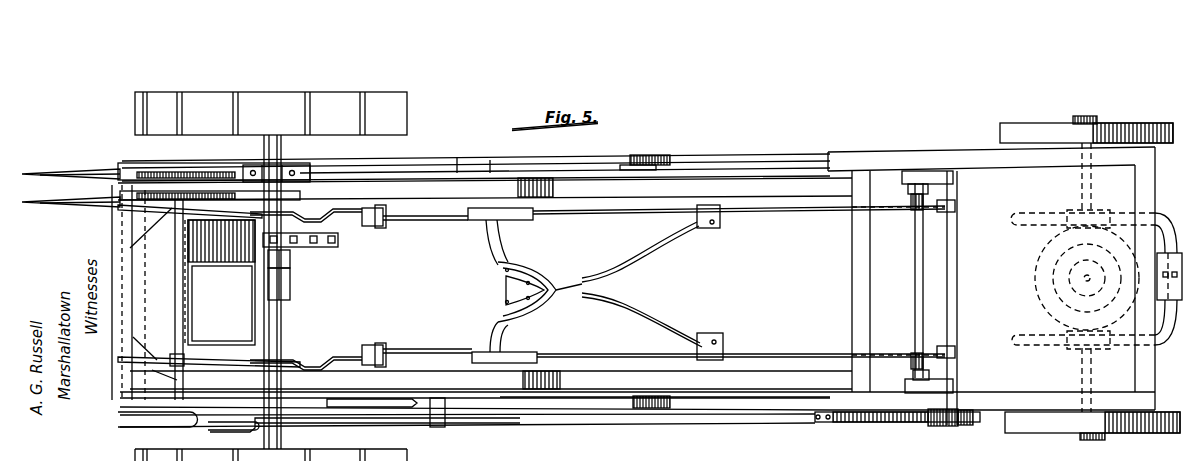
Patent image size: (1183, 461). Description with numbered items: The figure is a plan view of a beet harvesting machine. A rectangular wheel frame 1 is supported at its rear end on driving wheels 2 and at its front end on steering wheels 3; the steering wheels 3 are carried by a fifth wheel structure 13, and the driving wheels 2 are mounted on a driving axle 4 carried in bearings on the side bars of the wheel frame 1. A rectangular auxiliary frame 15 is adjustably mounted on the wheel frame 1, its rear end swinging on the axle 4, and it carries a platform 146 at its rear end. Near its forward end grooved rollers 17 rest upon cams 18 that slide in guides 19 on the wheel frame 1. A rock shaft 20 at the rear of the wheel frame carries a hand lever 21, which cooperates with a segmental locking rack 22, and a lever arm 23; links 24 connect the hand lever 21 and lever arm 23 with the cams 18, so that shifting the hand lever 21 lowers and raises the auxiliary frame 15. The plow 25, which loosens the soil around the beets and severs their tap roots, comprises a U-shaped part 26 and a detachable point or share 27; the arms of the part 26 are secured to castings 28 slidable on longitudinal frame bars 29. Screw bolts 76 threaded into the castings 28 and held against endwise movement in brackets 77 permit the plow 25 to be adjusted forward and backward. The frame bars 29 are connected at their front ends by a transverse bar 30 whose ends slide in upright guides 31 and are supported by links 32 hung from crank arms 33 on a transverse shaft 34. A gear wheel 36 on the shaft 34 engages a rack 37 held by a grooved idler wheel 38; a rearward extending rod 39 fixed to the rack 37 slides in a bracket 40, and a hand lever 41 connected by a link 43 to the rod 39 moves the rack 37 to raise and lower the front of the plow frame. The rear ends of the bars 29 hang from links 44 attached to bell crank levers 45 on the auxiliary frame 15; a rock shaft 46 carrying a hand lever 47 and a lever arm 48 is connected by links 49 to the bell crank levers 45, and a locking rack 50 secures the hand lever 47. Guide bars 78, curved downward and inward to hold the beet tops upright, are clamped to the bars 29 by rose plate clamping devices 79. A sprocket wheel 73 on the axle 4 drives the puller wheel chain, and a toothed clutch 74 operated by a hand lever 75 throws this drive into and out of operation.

The wheel frame 1 is at (836, 160).
The driving wheels 2 is at (340, 122).
The steering wheels 3 is at (1042, 131).
The driving axle 4 is at (284, 318).
The fifth wheel structure 13 is at (1042, 270).
The auxiliary frame 15 is at (743, 186).
The grooved rollers 17 is at (658, 410).
The cams 18 is at (626, 160).
The guides 19 is at (690, 160).
The rock shaft 20 is at (196, 269).
The hand lever 21 is at (70, 171).
The segmental locking rack 22 is at (228, 170).
The lever arm 23 is at (162, 422).
The links 24 is at (418, 163).
The plow 25 is at (500, 286).
The U-shaped part 26 is at (492, 243).
The point or share 27 is at (543, 292).
The castings 28 is at (520, 220).
The longitudinal frame bars 29 is at (645, 214).
The transverse rod or bar 30 is at (915, 280).
The upright guides 31 is at (945, 178).
The links 32 is at (925, 208).
The crank arms 33 is at (956, 206).
The transverse shaft 34 is at (955, 252).
The gear wheel 36 is at (962, 425).
The rack 37 is at (870, 424).
The grooved idler wheel 38 is at (946, 426).
The rearward extending rod 39 is at (767, 410).
The bracket 40 is at (455, 398).
The hand lever 41 is at (380, 403).
The link 43 is at (355, 424).
The links 44 is at (366, 222).
The bell crank levers 45 is at (350, 210).
The rock shaft 46 is at (176, 276).
The hand lever 47 is at (64, 205).
The lever arm 48 is at (172, 357).
The links 49 is at (175, 210).
The locking rack 50 is at (225, 192).
The sprocket wheel 73 is at (302, 246).
The toothed clutch 74 is at (290, 262).
The hand lever 75 is at (290, 290).
The screw bolts 76 is at (405, 221).
The brackets 77 is at (380, 228).
The guide bars 78 is at (640, 255).
The rose plate clamping devices 79 is at (720, 225).
The platform 146 is at (222, 303).